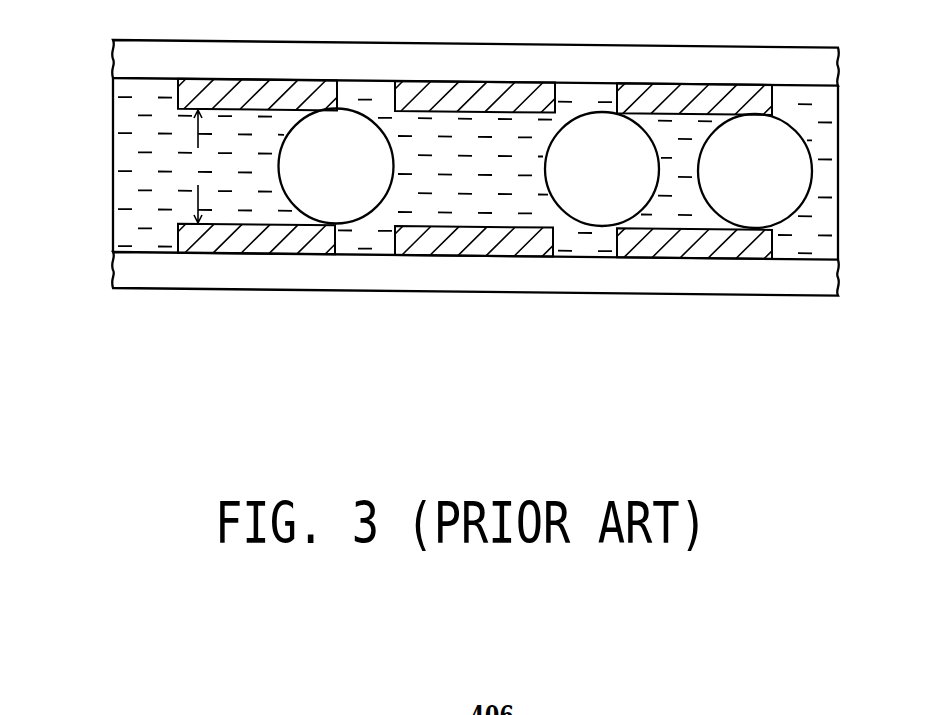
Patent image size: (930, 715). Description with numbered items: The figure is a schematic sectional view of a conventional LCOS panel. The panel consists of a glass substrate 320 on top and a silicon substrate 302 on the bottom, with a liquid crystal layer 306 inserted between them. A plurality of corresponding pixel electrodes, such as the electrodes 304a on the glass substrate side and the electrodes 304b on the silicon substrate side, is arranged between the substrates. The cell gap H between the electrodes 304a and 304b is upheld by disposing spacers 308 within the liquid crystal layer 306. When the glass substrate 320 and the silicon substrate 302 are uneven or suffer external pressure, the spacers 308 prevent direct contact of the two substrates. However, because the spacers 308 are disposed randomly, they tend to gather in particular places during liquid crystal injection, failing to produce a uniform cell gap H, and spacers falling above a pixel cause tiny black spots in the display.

The silicon substrate 302 is at (685, 280).
The glass substrate 320 is at (688, 60).
The pixel electrode 304a is at (260, 88).
The pixel electrode 304b is at (255, 248).
The liquid crystal layer 306 is at (107, 82).
The spacers 308 is at (593, 207).
The cell gap H is at (197, 166).